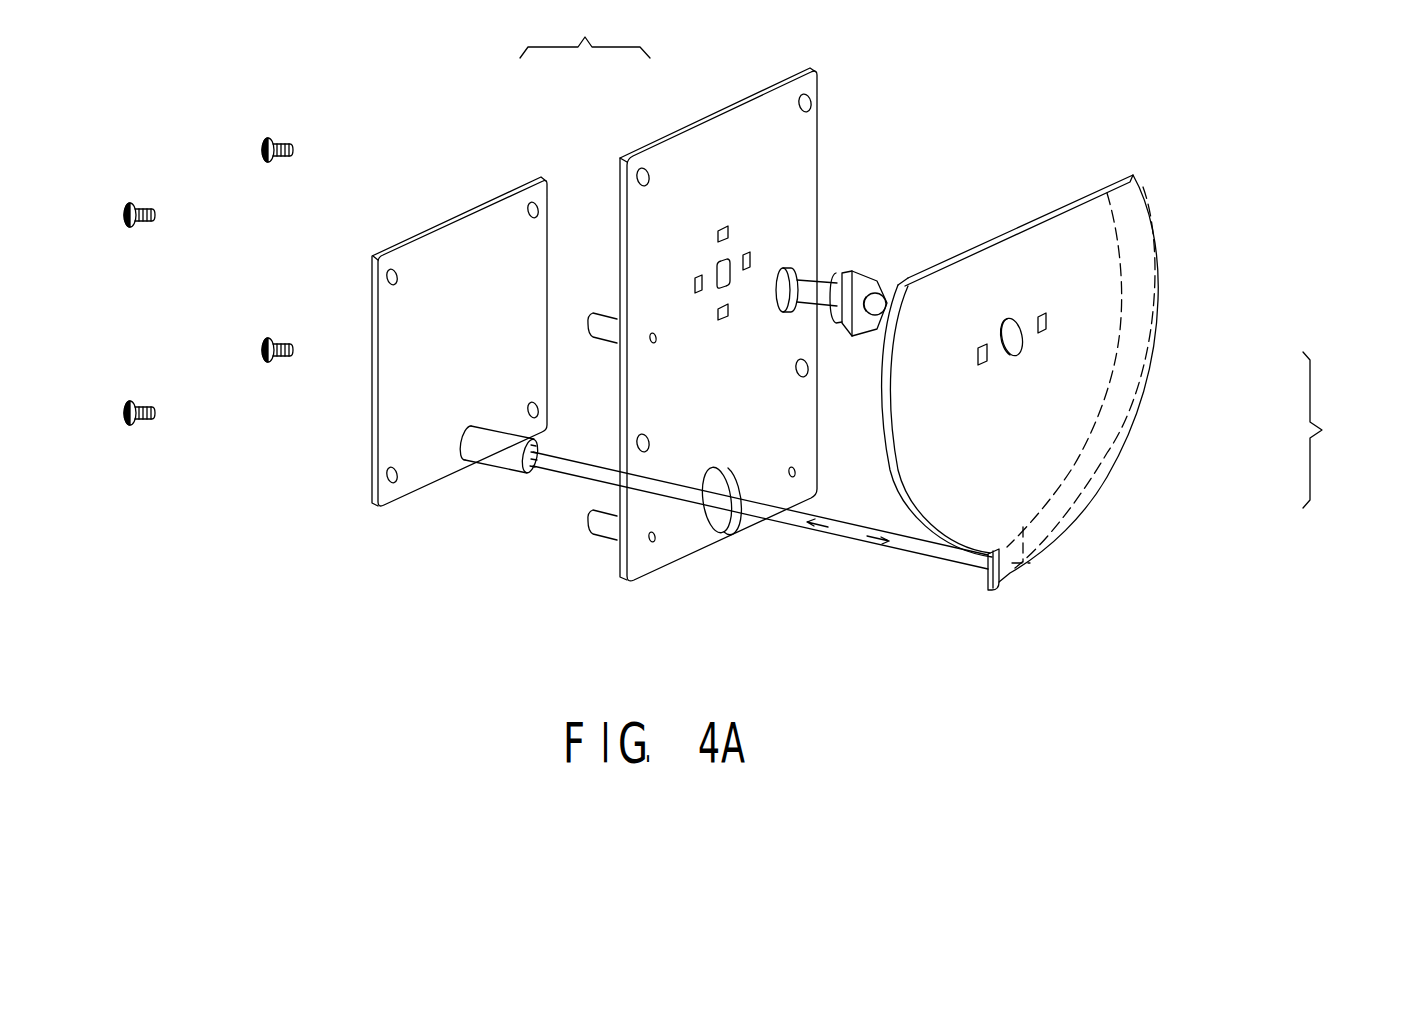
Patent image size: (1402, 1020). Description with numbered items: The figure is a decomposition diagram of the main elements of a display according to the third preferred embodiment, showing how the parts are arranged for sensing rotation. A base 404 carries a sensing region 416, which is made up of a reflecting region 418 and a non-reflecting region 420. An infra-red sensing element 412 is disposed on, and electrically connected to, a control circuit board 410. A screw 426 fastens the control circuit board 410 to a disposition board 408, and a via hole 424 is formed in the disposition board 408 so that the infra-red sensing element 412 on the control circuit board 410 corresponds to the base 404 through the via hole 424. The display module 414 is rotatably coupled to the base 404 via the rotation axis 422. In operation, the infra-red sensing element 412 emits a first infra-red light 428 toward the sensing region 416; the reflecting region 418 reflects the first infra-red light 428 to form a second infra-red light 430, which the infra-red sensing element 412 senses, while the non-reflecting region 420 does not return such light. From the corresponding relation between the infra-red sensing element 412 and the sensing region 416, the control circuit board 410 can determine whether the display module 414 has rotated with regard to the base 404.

The base 404 is at (1087, 190).
The disposition board 408 is at (723, 107).
The control circuit board 410 is at (460, 215).
The infra-red sensing element 412 is at (540, 465).
The display module 414 is at (585, 29).
The sensing region 416 is at (1343, 430).
The reflecting region 418 is at (1010, 572).
The non-reflecting region 420 is at (1133, 355).
The rotation axis 422 is at (820, 287).
The via hole 424 is at (732, 519).
The screw 426 is at (285, 140).
The first infra-red light 428 is at (851, 527).
The second infra-red light 430 is at (896, 550).